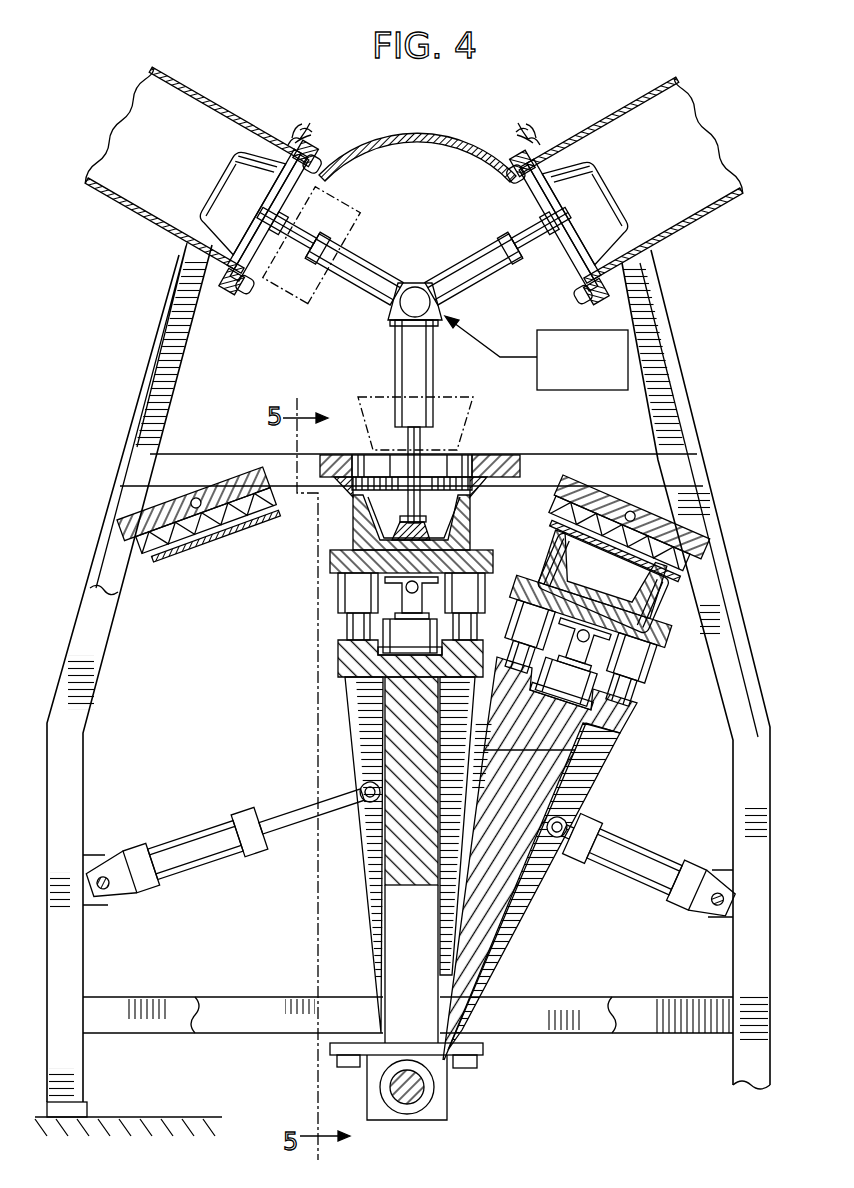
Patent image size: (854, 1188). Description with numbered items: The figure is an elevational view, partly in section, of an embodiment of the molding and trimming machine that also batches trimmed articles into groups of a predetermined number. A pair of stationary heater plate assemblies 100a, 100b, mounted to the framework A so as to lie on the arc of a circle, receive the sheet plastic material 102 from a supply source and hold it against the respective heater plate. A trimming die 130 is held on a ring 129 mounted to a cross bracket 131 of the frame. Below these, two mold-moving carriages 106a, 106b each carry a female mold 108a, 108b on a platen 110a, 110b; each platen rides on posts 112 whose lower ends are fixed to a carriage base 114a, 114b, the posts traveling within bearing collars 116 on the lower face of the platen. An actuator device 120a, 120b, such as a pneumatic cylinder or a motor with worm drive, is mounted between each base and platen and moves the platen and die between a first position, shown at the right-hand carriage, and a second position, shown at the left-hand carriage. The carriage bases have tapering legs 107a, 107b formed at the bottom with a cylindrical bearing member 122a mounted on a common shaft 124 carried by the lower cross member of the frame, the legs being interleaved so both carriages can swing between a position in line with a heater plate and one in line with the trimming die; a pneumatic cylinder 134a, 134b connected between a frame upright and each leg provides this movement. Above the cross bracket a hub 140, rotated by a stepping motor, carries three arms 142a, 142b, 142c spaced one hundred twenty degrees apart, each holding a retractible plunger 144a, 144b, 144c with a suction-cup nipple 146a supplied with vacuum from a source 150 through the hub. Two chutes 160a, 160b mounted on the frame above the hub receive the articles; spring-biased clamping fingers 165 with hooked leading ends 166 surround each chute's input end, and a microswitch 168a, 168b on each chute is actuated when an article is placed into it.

The stationary heater plate assembly 100a is at (130, 518).
The stationary heater plate assembly 100b is at (620, 503).
The sheet plastic material 102 is at (168, 560).
The mold-moving carriage 106a is at (338, 722).
The mold-moving carriage 106b is at (612, 778).
The tapering leg 107a is at (390, 964).
The tapering leg 107b is at (489, 958).
The female mold 108a is at (352, 530).
The female mold 108b is at (658, 622).
The platen 110a is at (336, 563).
The platen 110b is at (658, 660).
The post 112 is at (350, 632).
The carriage base 114a is at (370, 878).
The carriage base 114b is at (537, 882).
The bearing collar 116 is at (345, 604).
The actuator device 120a is at (412, 640).
The actuator device 120b is at (574, 675).
The cylindrical bearing member 122a is at (407, 1120).
The shaft 124 is at (436, 1086).
The ring 129 is at (505, 455).
The trimming die 130 is at (476, 490).
The cross bracket 131 is at (207, 467).
The pneumatic cylinder 134a is at (172, 870).
The pneumatic cylinder 134b is at (658, 893).
The hub 140 is at (416, 288).
The arm 142a is at (433, 379).
The arm 142b is at (473, 285).
The arm 142c is at (378, 300).
The retractible plunger 144a is at (408, 441).
The retractible plunger 144b is at (545, 230).
The retractible plunger 144c is at (284, 222).
The nipple 146a is at (396, 530).
The vacuum source 150 is at (600, 386).
The chute 160a is at (126, 110).
The chute 160b is at (715, 212).
The spring-biased clamping finger 165 is at (253, 122).
The hooked leading end 166 is at (326, 160).
The microswitch 168a is at (296, 137).
The microswitch 168b is at (544, 134).
The framework A is at (745, 616).